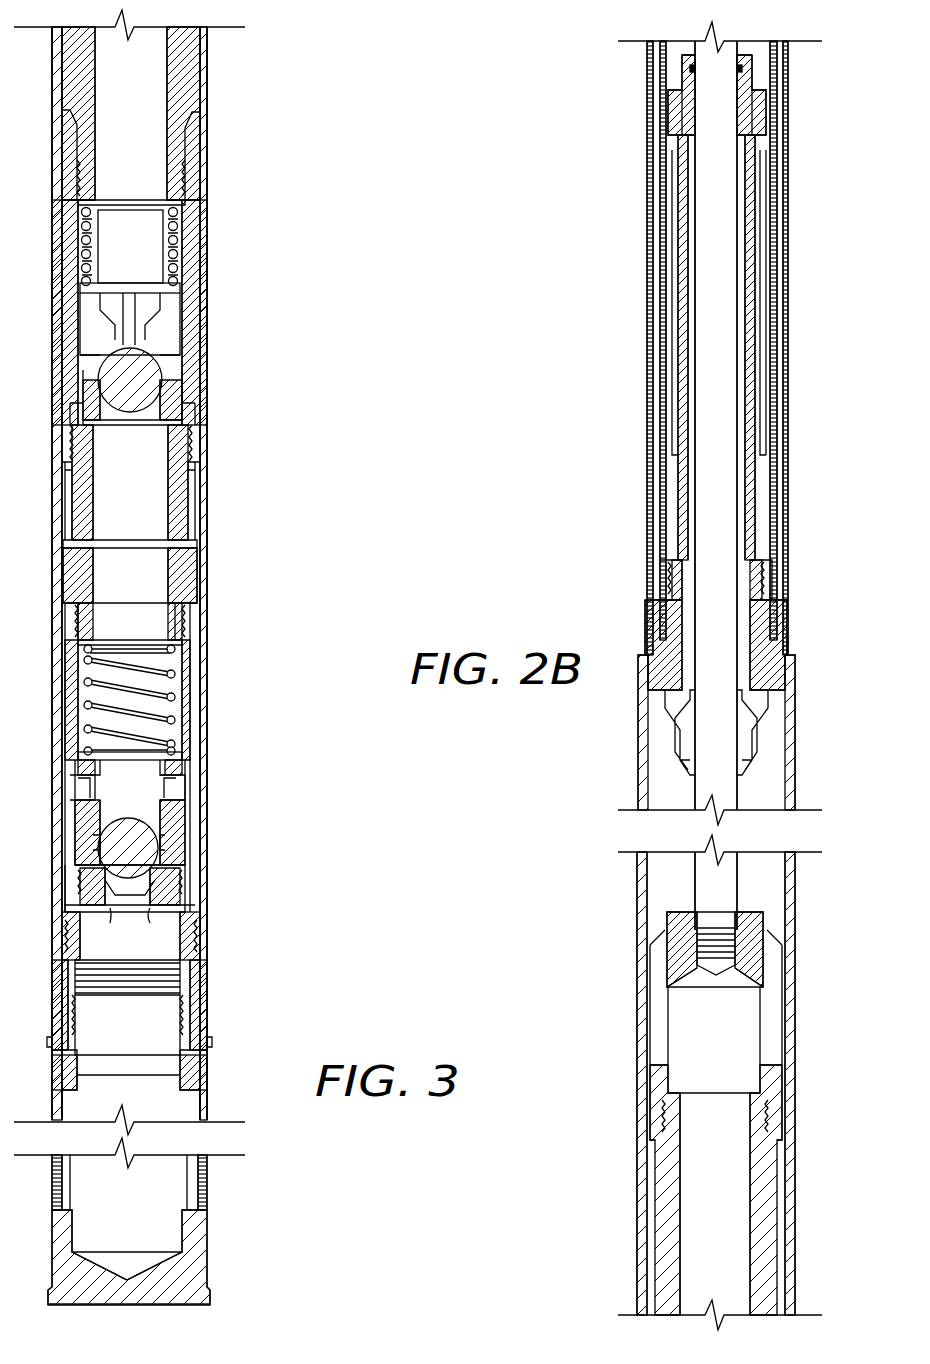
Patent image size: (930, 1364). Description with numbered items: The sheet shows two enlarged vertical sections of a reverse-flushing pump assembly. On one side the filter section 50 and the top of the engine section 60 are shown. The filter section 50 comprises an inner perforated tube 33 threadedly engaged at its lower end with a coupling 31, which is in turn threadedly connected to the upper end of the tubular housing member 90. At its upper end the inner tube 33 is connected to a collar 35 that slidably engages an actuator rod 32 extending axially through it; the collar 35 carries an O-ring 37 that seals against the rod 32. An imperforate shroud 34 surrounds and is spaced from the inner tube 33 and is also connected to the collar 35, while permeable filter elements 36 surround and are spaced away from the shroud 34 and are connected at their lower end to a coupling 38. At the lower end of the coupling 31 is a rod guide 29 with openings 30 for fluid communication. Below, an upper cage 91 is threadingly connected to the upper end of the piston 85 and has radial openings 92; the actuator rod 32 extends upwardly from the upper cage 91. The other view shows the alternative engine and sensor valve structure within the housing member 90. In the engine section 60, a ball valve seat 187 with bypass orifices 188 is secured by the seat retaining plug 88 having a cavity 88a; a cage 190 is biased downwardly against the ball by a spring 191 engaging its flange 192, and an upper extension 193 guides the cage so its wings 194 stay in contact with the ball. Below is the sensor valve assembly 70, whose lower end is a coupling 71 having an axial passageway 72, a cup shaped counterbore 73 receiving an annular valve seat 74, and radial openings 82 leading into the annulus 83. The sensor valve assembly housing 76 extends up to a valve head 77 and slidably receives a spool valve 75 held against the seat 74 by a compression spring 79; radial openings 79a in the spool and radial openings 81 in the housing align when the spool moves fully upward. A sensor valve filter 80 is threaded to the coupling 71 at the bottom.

In FIG. 3, the tubular housing member 90 is at (209, 60).
In FIG. 3, the piston 85 is at (190, 92).
In FIG. 3, the engine section 60 is at (244, 158).
In FIG. 3, the spring 191 is at (178, 218).
In FIG. 3, the upper extension 193 is at (128, 258).
In FIG. 3, the flange 192 is at (182, 282).
In FIG. 3, the cage 190 is at (172, 306).
In FIG. 3, the cage wings 194 is at (182, 332).
In FIG. 3, the bypass orifices 188 is at (170, 388).
In FIG. 3, the ball valve seat 187 is at (185, 412).
In FIG. 3, the cavity 88a is at (130, 462).
In FIG. 3, the seat retaining plug 88 is at (178, 515).
In FIG. 3, the valve head 77 is at (185, 557).
In FIG. 3, the sensor valve assembly 70 is at (201, 667).
In FIG. 3, the sensor valve assembly housing 76 is at (185, 700).
In FIG. 3, the compression spring 79 is at (170, 732).
In FIG. 3, the radial openings 81 is at (190, 762).
In FIG. 3, the radial openings 79a is at (178, 787).
In FIG. 3, the spool valve 75 is at (172, 812).
In FIG. 3, the annulus 83 is at (200, 846).
In FIG. 3, the annular valve seat 74 is at (180, 875).
In FIG. 3, the radial openings 82 is at (185, 918).
In FIG. 3, the cup shaped counterbore 73 is at (112, 933).
In FIG. 3, the axial passageway 72 is at (156, 933).
In FIG. 3, the coupling 71 is at (196, 1003).
In FIG. 3, the sensor valve filter 80 is at (244, 1178).
In FIG. 2B, the collar 35 is at (755, 82).
In FIG. 2B, the imperforate shroud 34 is at (765, 292).
In FIG. 2B, the filter section 50 is at (790, 328).
In FIG. 2B, the inner perforated tube 33 is at (752, 375).
In FIG. 2B, the O-ring 37 is at (763, 418).
In FIG. 2B, the permeable filter elements 36 is at (790, 488).
In FIG. 2B, the coupling 38 is at (778, 578).
In FIG. 2B, the coupling 31 is at (778, 632).
In FIG. 2B, the openings 30 is at (760, 722).
In FIG. 2B, the rod guide 29 is at (752, 752).
In FIG. 2B, the actuator rod 32 is at (718, 900).
In FIG. 2B, the upper cage 91 is at (750, 958).
In FIG. 2B, the radial openings 92 is at (772, 1020).